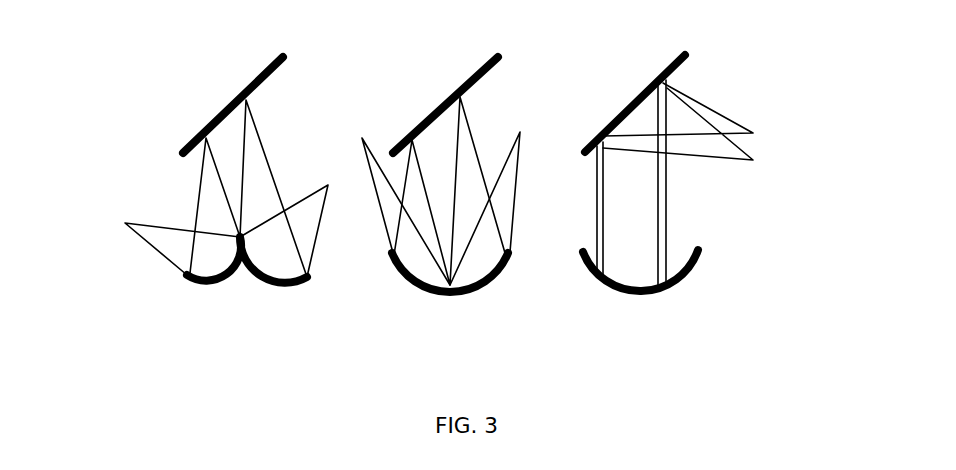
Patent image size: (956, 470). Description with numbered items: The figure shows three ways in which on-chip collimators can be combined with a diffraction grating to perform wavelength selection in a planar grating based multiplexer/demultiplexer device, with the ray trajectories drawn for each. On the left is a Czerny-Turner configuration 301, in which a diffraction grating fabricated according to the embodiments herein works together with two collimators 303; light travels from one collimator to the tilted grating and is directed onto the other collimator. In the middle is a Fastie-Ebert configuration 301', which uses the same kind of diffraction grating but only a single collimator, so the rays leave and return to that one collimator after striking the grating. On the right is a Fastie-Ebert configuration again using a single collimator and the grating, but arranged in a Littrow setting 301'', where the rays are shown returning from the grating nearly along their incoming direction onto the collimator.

The Czerny-Turner configuration 301 is at (167, 178).
The Fastie-Ebert configuration 301' is at (478, 174).
The Littrow setting 301'' is at (738, 172).
The collimators 303 is at (247, 287).